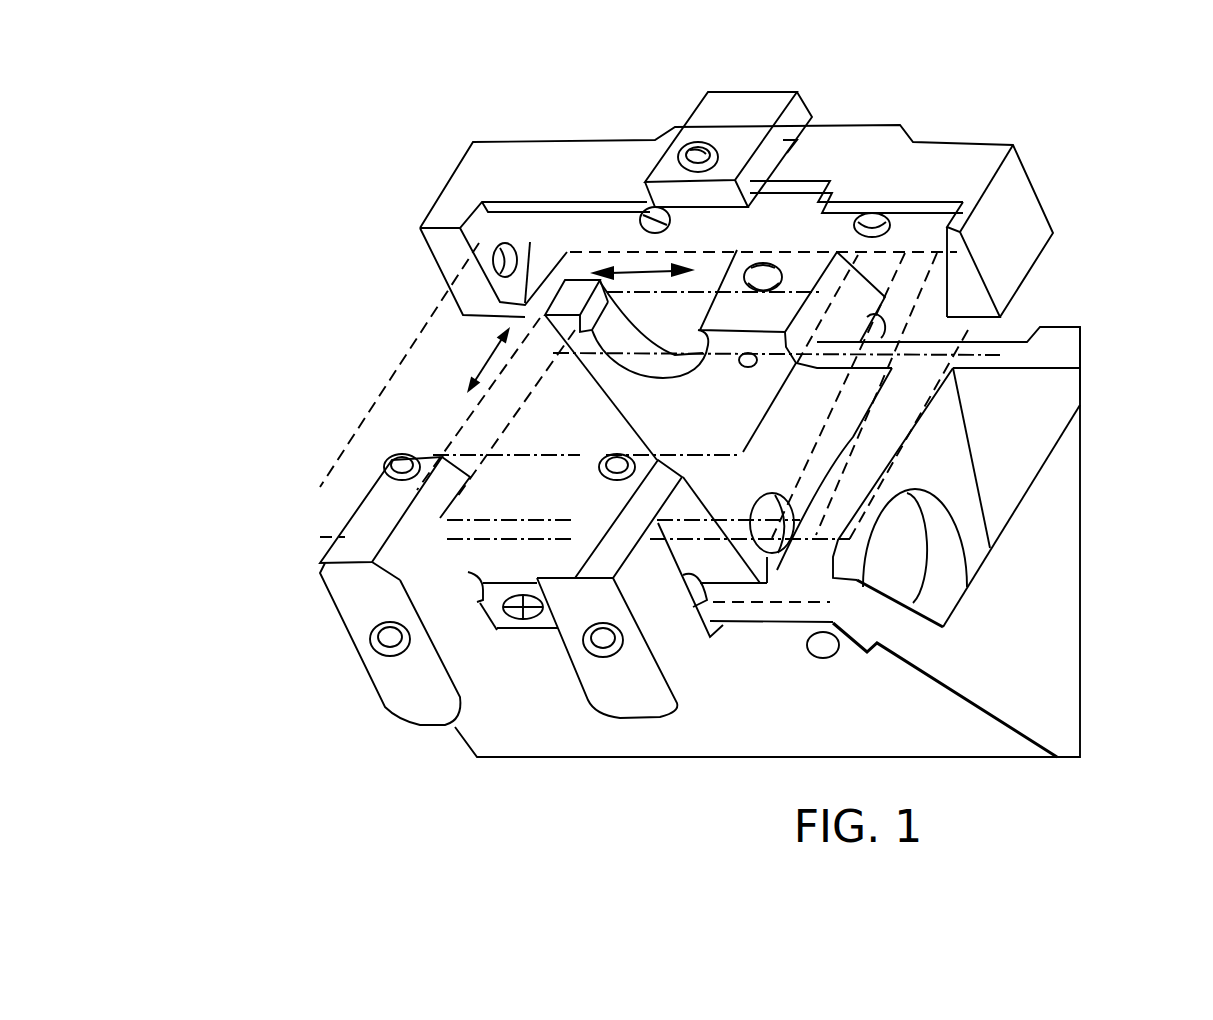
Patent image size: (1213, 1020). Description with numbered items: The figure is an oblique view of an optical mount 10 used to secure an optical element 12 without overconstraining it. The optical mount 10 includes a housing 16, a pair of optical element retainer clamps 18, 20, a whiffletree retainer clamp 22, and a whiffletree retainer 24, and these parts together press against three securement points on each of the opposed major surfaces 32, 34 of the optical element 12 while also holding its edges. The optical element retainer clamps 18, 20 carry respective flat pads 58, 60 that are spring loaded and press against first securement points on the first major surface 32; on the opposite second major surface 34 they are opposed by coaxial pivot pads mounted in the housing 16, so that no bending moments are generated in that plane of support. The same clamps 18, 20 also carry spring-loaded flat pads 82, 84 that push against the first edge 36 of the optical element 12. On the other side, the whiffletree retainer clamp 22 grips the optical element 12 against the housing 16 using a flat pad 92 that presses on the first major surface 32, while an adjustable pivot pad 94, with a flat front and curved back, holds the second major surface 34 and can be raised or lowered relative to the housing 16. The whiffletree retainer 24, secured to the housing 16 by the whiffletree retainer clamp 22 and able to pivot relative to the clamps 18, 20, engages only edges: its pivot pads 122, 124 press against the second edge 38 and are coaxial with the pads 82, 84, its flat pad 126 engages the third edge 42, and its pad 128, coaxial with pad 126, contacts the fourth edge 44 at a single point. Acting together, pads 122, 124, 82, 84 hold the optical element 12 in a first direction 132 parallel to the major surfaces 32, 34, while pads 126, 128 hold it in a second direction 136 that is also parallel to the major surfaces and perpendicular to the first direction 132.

The optical mount 10 is at (681, 417).
The optical element 12 is at (315, 439).
The housing 16 is at (1050, 667).
The optical element retainer clamp 18 is at (403, 692).
The optical element retainer clamp 20 is at (680, 653).
The whiffletree retainer clamp 22 is at (738, 108).
The whiffletree retainer 24 is at (1027, 203).
The first major surface 32 is at (407, 387).
The second major surface 34 is at (988, 331).
The first edge 36 is at (523, 620).
The second edge 38 is at (867, 317).
The third edge 42 is at (323, 480).
The fourth edge 44 is at (1080, 365).
The flat pad 58 is at (382, 496).
The flat pad 60 is at (598, 444).
The flat pad 82 is at (338, 654).
The flat pad 84 is at (615, 684).
The flat pad 92 is at (703, 126).
The adjustable pivot pad 94 is at (760, 255).
The pivot pad 122 is at (655, 210).
The pivot pad 124 is at (868, 218).
The flat pad 126 is at (498, 255).
The pad 128 is at (928, 278).
The first direction 132 is at (462, 348).
The second direction 136 is at (630, 270).